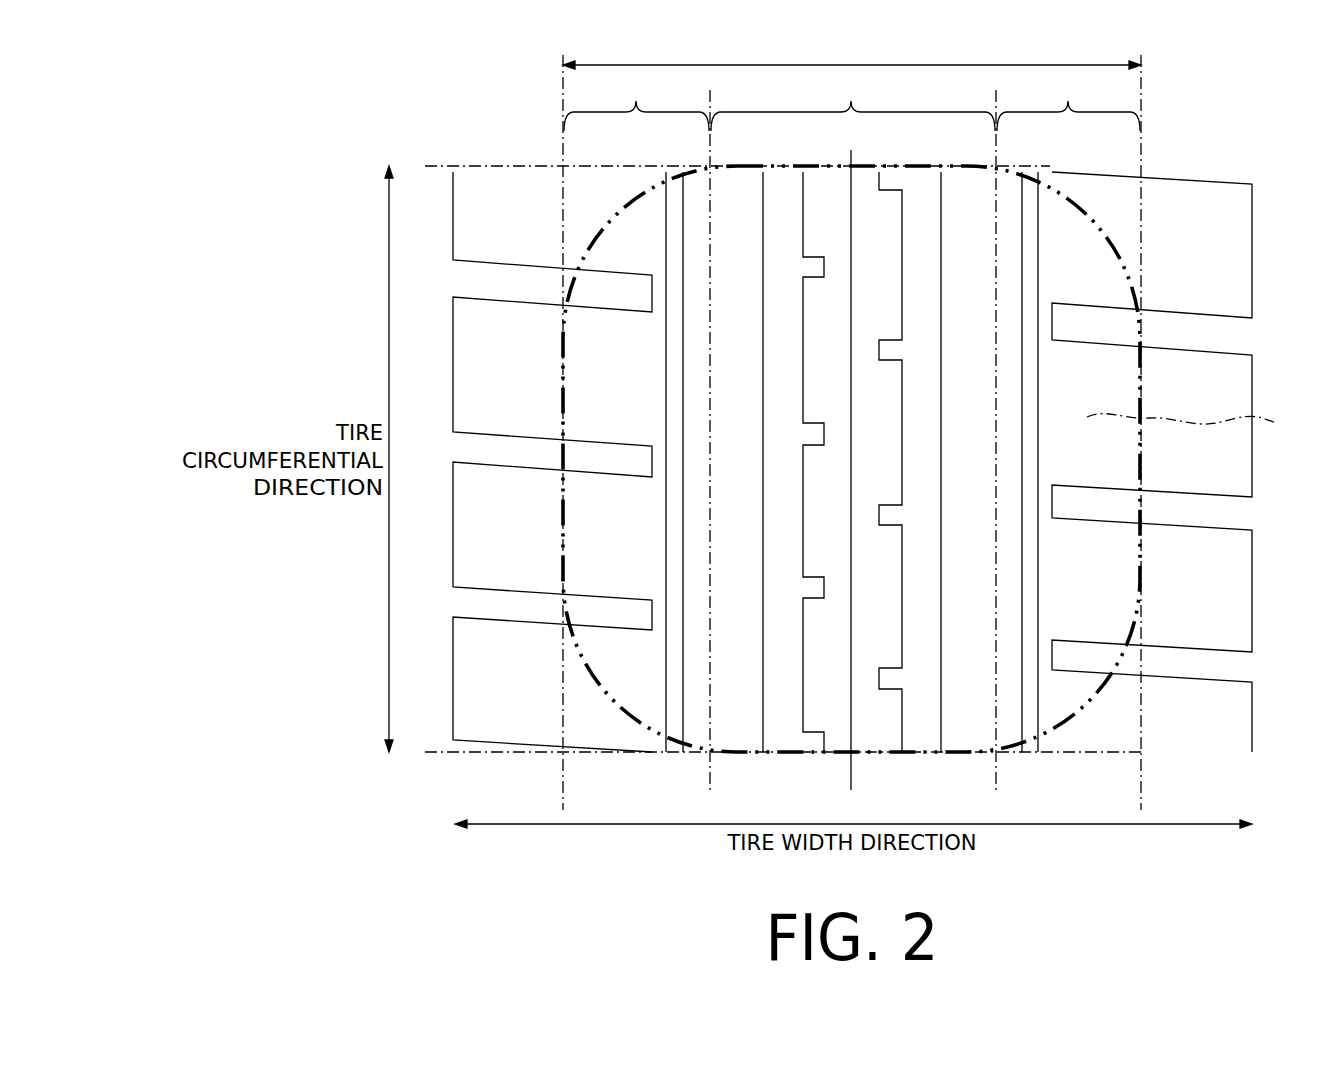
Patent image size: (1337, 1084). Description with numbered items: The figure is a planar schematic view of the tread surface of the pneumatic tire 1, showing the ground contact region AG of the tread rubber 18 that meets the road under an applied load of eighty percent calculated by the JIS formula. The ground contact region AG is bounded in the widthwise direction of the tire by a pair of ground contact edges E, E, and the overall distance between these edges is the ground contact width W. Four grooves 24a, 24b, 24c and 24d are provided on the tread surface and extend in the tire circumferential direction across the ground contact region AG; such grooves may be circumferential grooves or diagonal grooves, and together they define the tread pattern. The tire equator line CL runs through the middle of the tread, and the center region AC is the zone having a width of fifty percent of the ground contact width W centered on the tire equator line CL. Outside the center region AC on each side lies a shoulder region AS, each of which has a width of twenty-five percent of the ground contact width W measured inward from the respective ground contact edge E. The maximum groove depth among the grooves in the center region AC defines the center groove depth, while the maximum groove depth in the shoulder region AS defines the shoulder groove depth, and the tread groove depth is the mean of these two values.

The pneumatic tire 1 is at (1257, 160).
The tread rubber 18 is at (1073, 583).
The groove 24a is at (673, 752).
The groove 24b is at (783, 752).
The groove 24c is at (920, 752).
The groove 24d is at (1030, 752).
The tire equator line CL is at (851, 456).
The ground contact edge E is at (562, 165).
The ground contact width W is at (852, 53).
The shoulder region AS is at (852, 102).
The center region AC is at (853, 102).
The ground contact region AG is at (1199, 419).